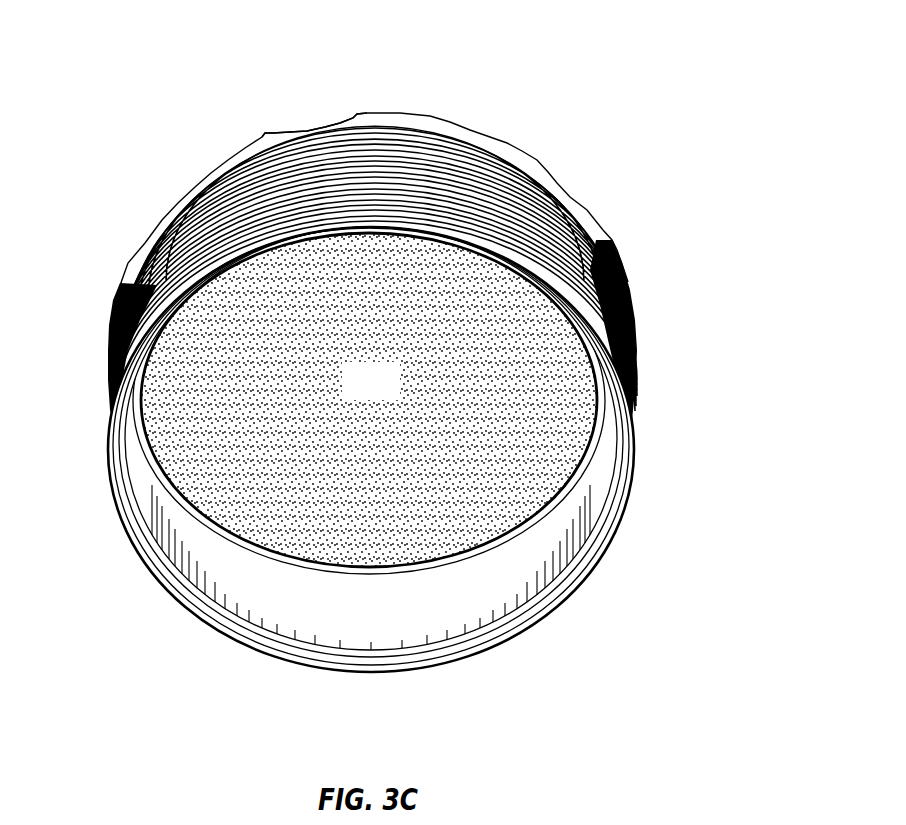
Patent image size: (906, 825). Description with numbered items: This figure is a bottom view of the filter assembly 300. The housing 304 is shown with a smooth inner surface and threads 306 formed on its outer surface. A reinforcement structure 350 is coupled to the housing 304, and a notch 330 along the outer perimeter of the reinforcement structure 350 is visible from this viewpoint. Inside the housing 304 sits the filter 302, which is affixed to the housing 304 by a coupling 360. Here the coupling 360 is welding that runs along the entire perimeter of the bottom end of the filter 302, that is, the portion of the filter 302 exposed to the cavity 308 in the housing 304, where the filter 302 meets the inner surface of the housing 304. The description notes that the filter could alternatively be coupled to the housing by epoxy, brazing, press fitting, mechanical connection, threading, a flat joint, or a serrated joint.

The filter assembly 300 is at (429, 373).
The filter 302 is at (393, 396).
The housing 304 is at (389, 622).
The threads 306 is at (472, 170).
The cavity 308 is at (262, 613).
The notch 330 is at (317, 134).
The reinforcement structure 350 is at (182, 187).
The coupling 360 is at (431, 566).